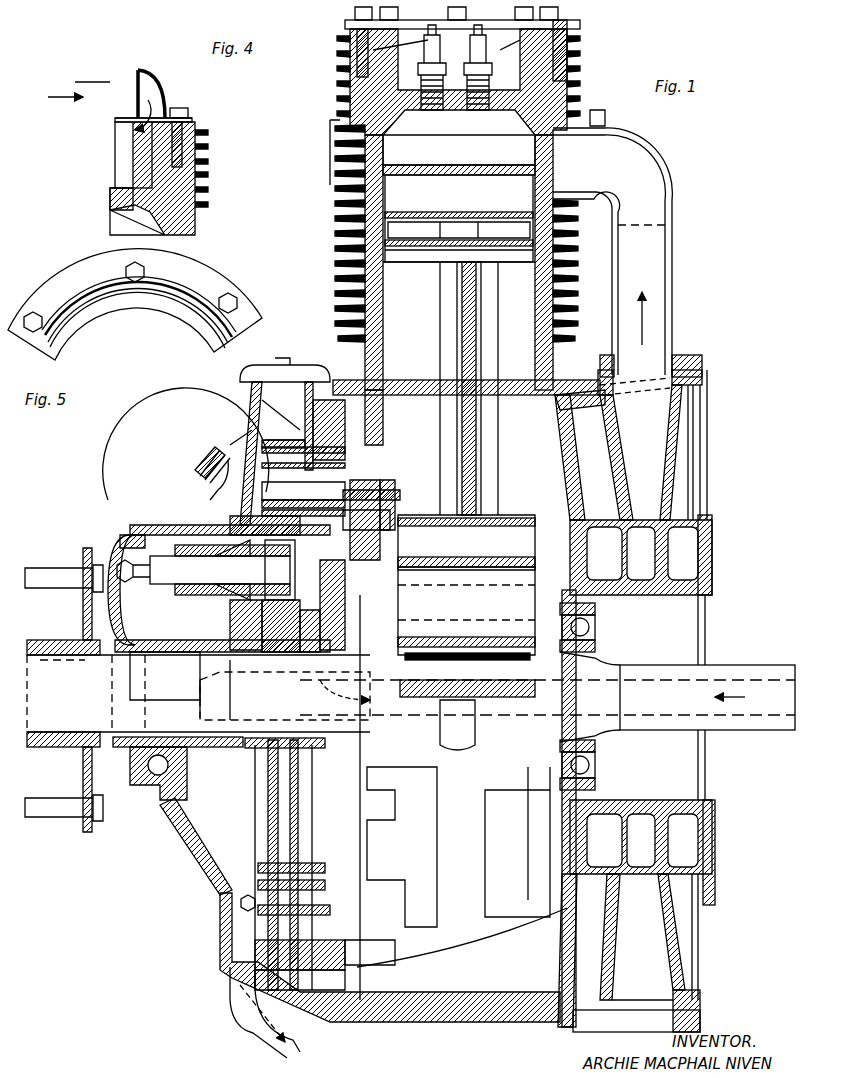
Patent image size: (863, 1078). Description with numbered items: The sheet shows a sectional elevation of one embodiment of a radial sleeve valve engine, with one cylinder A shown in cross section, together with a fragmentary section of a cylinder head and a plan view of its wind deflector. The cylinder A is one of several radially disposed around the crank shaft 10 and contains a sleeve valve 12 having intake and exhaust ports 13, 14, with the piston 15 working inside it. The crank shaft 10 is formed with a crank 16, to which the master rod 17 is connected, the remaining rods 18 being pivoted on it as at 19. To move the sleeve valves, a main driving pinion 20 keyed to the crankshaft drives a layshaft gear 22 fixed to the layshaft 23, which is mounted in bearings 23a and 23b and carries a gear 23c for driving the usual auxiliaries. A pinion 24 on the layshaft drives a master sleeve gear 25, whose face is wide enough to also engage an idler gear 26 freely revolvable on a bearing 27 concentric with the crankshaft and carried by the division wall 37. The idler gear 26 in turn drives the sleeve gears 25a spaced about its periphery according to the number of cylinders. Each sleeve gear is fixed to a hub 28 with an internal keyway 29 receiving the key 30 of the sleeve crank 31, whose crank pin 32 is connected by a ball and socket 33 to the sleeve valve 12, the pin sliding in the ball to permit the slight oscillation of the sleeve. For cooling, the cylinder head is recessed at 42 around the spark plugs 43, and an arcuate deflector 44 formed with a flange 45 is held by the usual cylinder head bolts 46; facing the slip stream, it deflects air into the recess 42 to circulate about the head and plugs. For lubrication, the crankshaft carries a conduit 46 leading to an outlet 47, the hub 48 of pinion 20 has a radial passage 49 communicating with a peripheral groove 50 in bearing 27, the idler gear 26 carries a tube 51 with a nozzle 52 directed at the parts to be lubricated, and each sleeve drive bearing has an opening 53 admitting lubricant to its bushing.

In FIG. 1, the crank shaft 10 is at (738, 664).
In FIG. 1, the sleeve valve 12 is at (365, 322).
In FIG. 1, the intake ports 13 is at (530, 150).
In FIG. 1, the exhaust ports 14 is at (385, 152).
In FIG. 1, the piston 15 is at (452, 172).
In FIG. 1, the crank 16 is at (520, 560).
In FIG. 1, the master rod 17 is at (478, 442).
In FIG. 1, the rods 18 is at (470, 737).
In FIG. 1, the pivot 19 is at (432, 700).
In FIG. 1, the main driving pinion 20 is at (240, 760).
In FIG. 1, the layshaft gear 22 is at (230, 470).
In FIG. 1, the layshaft 23 is at (200, 560).
In FIG. 1, the bearing 23a is at (145, 548).
In FIG. 1, the bearing 23b is at (200, 472).
In FIG. 1, the gear 23c is at (195, 660).
In FIG. 1, the pinion 24 is at (255, 570).
In FIG. 1, the master sleeve gear 25 is at (252, 430).
In FIG. 1, the sleeve gears 25a is at (282, 848).
In FIG. 1, the idler gear 26 is at (285, 805).
In FIG. 1, the bearing 27 is at (268, 760).
In FIG. 1, the hub 28 is at (345, 455).
In FIG. 1, the internal keyway 29 is at (325, 491).
In FIG. 1, the key 30 is at (297, 491).
In FIG. 1, the sleeve crank 31 is at (345, 482).
In FIG. 1, the crank pin 32 is at (395, 497).
In FIG. 1, the ball and socket 33 is at (385, 478).
In FIG. 1, the division wall 37 is at (330, 868).
In FIG. 4, the recess 42 is at (128, 171).
In FIG. 1, the recess 42 is at (565, 42).
In FIG. 1, the spark plugs 43 is at (340, 72).
In FIG. 4, the arcuate deflector 44 is at (158, 90).
In FIG. 5, the arcuate deflector 44 is at (128, 315).
In FIG. 4, the flange 45 is at (190, 117).
In FIG. 5, the flange 45 is at (170, 272).
In FIG. 4, the cylinder head bolts 46 is at (182, 108).
In FIG. 5, the cylinder head bolts 46 is at (240, 308).
In FIG. 1, the cylinder head bolts 46 is at (357, 29).
In FIG. 1, the outlet 47 is at (285, 797).
In FIG. 1, the hub 48 is at (312, 652).
In FIG. 1, the radial passage 49 is at (280, 652).
In FIG. 1, the peripheral groove 50 is at (248, 640).
In FIG. 1, the tube 51 is at (322, 590).
In FIG. 1, the nozzle 52 is at (366, 520).
In FIG. 1, the opening 53 is at (265, 526).
In FIG. 4, the cylinder A is at (200, 182).
In FIG. 1, the cylinder A is at (580, 78).